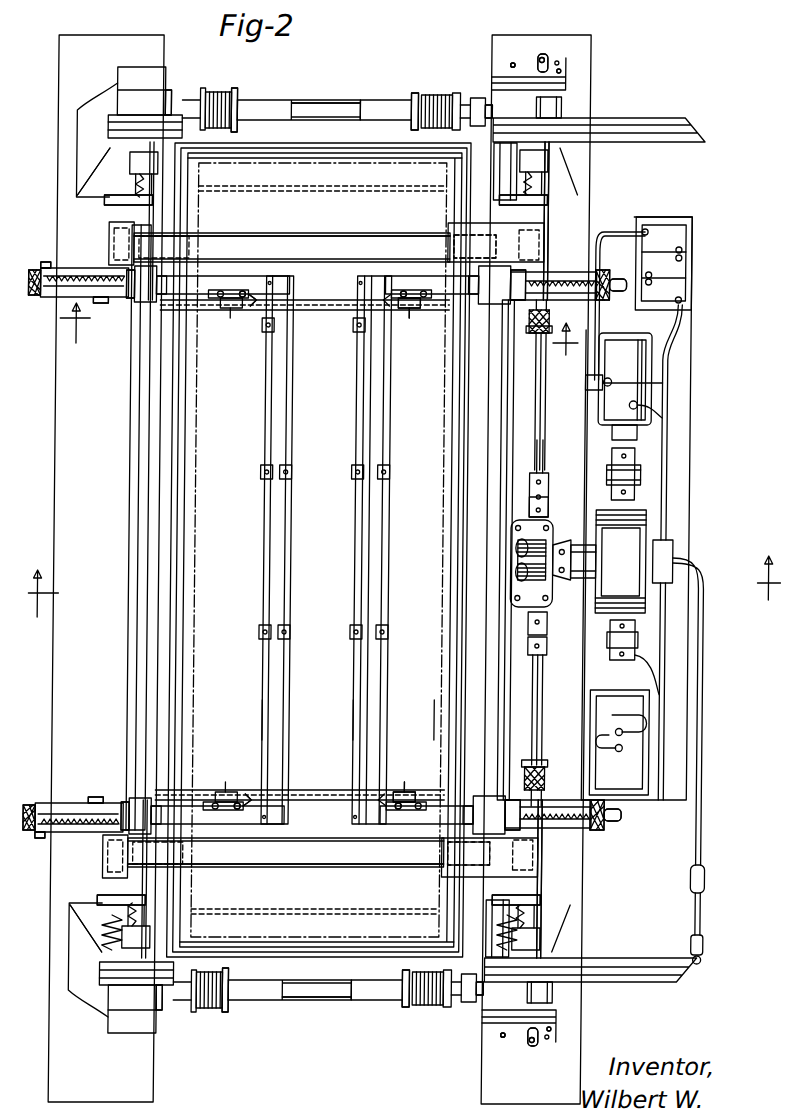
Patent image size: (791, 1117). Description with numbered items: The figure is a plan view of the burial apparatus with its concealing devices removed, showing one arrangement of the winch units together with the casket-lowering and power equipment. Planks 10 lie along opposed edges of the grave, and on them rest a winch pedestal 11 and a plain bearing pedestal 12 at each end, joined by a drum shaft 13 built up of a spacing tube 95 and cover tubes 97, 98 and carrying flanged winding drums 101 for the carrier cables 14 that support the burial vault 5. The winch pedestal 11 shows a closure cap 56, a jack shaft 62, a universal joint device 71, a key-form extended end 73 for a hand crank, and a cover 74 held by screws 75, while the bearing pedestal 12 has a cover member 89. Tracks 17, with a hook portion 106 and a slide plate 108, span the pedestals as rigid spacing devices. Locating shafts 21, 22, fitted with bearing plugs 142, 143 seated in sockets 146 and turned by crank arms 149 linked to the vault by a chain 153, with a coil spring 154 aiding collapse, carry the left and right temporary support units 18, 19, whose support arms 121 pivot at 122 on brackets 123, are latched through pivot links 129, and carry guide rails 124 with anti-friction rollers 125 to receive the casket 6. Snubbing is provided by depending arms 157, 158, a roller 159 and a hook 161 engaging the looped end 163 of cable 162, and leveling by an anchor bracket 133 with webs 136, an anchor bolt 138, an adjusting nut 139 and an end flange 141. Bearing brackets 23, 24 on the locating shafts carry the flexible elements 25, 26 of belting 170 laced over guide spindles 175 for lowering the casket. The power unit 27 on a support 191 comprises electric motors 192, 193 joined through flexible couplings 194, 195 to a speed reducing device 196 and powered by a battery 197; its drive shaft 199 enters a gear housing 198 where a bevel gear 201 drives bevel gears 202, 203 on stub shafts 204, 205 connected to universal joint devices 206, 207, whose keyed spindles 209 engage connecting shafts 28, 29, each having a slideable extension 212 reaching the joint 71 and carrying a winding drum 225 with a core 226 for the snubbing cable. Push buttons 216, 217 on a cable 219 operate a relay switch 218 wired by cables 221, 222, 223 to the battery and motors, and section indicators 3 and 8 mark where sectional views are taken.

The section line 3- 3 is at (401, 588).
The burial vault 5 is at (305, 145).
The casket 6 is at (312, 945).
The section line 8- 8 is at (321, 337).
The planks 10 is at (163, 52).
The winch pedestal 11 is at (491, 86).
The plain bearing pedestal 12 is at (162, 73).
The drum shaft 13 is at (302, 103).
The carrier cables 14 is at (208, 130).
The tracks 17 is at (142, 122).
The left temporary support unit 18 is at (262, 540).
The right temporary support unit 19 is at (394, 540).
The locating shaft 21 is at (132, 535).
The locating shaft 22 is at (503, 395).
The bearing bracket 23 is at (110, 223).
The bearing bracket 24 is at (449, 230).
The flexible element 25 is at (255, 236).
The flexible element 26 is at (222, 860).
The power unit 27 is at (696, 332).
The connecting shaft 28 is at (548, 397).
The connecting shaft 29 is at (546, 728).
The closure cap 56 is at (484, 106).
The jack shaft 62 is at (512, 63).
The universal joint device 71 is at (530, 160).
The extended end 73 is at (548, 58).
The cover 74 is at (541, 58).
The screws 75 is at (492, 60).
The cover member 89 is at (168, 92).
The spacing tube 95 is at (345, 100).
The cover tube 97 is at (385, 97).
The cover tube 98 is at (275, 100).
The flanged winding drum 101 is at (236, 94).
The hook portion 106 is at (108, 119).
The slide plate 108 is at (463, 98).
The support arm 121 is at (436, 848).
The pivot connection 122 is at (165, 300).
The bracket 123 is at (160, 268).
The guide rails 124 is at (266, 722).
The anti-friction rollers 125 is at (357, 474).
The pivot links 129 is at (232, 290).
The anchor bracket 133 is at (86, 268).
The webs 136 is at (112, 268).
The anchor bolt 138 is at (96, 305).
The adjusting nut 139 is at (34, 296).
The end flange 141 is at (48, 262).
The bearing plug 142 is at (145, 160).
The bearing plug 143 is at (138, 975).
The sockets 146 is at (114, 152).
The crank arms 149 is at (110, 200).
The chain 153 is at (352, 192).
The coil spring 154 is at (118, 935).
The depending arm 157 is at (228, 305).
The depending arm 158 is at (405, 300).
The cylindrical roller 159 is at (236, 298).
The hook portion 161 is at (406, 308).
The cable 162 is at (345, 300).
The looped end 163 is at (400, 310).
The belting 170 is at (367, 240).
The guide spindle 175 is at (160, 237).
The support 191 is at (683, 455).
The electric motor 192 is at (655, 358).
The electric motor 193 is at (648, 760).
The flexible coupling 194 is at (645, 478).
The flexible coupling 195 is at (641, 652).
The speed reducing device 196 is at (650, 523).
The battery 197 is at (676, 270).
The gear housing 198 is at (553, 535).
The drive shaft 199 is at (570, 580).
The bevel gear 201 is at (534, 560).
The bevel gear 202 is at (520, 546).
The bevel gear 203 is at (520, 572).
The stub shaft 204 is at (550, 516).
The stub shaft 205 is at (550, 622).
The universal joint device 206 is at (550, 492).
The universal joint device 207 is at (550, 645).
The keyed spindles 209 is at (544, 462).
The slideable extension 212 is at (549, 208).
The push button 216 is at (710, 958).
The push button 217 is at (712, 878).
The relay switch 218 is at (678, 548).
The cable 219 is at (709, 836).
The cable 221 is at (672, 381).
The cable 222 is at (668, 418).
The cable 223 is at (638, 686).
The winding drum 225 is at (534, 338).
The core 226 is at (548, 338).